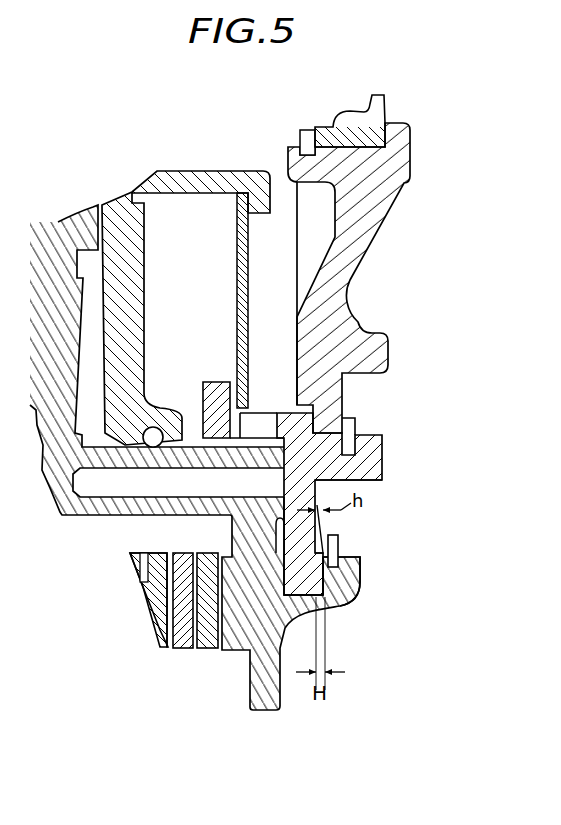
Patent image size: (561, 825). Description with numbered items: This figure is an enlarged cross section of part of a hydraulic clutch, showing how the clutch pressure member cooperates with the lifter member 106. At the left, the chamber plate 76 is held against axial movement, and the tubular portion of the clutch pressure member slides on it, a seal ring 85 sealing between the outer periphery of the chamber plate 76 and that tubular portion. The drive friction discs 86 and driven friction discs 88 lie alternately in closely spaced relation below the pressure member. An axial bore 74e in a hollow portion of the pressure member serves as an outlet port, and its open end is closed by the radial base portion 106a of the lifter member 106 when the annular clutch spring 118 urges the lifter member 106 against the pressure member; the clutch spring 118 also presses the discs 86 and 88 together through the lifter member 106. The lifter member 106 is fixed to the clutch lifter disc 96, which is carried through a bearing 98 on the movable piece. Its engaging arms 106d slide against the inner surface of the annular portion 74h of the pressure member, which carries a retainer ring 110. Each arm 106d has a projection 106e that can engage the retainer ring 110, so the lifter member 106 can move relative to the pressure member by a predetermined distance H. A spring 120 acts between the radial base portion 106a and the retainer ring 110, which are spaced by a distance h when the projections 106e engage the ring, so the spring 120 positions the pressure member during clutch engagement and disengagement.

The axial bore 74e is at (133, 494).
The annular portion 74h is at (361, 573).
The chamber plate 76 is at (145, 273).
The seal ring 85 is at (154, 430).
The drive friction discs 86 is at (207, 649).
The driven friction discs 88 is at (186, 649).
The clutch lifter disc 96 is at (402, 199).
The bearing 98 is at (381, 103).
The lifter member 106 is at (382, 452).
The radial base portion 106a is at (317, 483).
The engaging arms 106d is at (309, 586).
The projection 106e is at (330, 585).
The retainer ring 110 is at (341, 548).
The clutch spring 118 is at (248, 253).
The spring 120 is at (322, 528).